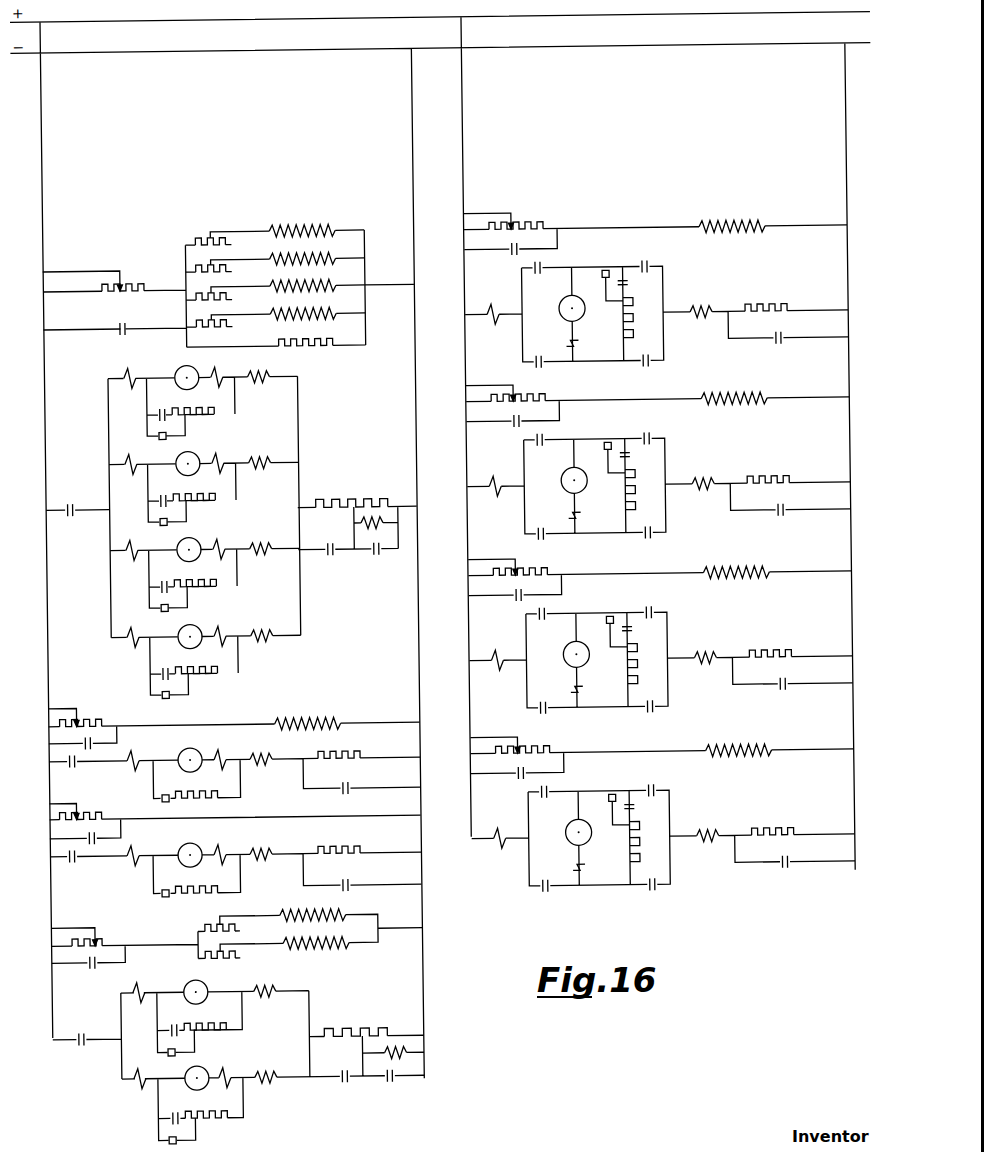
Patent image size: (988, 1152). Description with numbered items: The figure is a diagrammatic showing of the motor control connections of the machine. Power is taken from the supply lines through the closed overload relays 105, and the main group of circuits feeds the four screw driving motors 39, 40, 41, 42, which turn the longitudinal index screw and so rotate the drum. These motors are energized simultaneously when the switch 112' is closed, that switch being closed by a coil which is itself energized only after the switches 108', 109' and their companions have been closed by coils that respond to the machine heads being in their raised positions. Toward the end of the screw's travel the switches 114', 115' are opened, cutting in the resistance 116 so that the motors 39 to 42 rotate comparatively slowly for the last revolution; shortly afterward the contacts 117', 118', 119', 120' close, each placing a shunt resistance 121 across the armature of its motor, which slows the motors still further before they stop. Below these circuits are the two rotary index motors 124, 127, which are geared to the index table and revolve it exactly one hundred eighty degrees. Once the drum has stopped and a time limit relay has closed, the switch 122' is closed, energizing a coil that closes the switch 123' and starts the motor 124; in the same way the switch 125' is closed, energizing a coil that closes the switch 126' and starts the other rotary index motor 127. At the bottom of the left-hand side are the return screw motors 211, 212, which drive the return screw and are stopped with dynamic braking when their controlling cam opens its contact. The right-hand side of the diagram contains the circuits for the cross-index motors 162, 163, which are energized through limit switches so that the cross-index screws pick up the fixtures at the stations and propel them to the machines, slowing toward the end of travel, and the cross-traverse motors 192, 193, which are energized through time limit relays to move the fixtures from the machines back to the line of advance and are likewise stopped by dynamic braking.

The overload relays 105 is at (124, 371).
The screw driving motor 39 is at (179, 367).
The screw driving motor 40 is at (189, 462).
The screw driving motor 41 is at (189, 544).
The screw driving motor 42 is at (188, 632).
The contact 117' is at (139, 406).
The contact 118' is at (140, 492).
The contact 119' is at (140, 579).
The contact 120' is at (173, 664).
The shunt resistance 121 is at (185, 412).
The switch 108' is at (145, 437).
The switch 109' is at (147, 519).
The switch 112' is at (78, 500).
The resistance 116 is at (337, 500).
The switch 115' is at (334, 557).
The switch 114' is at (384, 556).
The rotary index motor 124 is at (200, 751).
The rotary index motor 127 is at (199, 848).
The switch 123' is at (93, 773).
The switch 126' is at (94, 867).
The switch 122' is at (172, 809).
The switch 125' is at (177, 905).
The return screw motor 211 is at (206, 987).
The return screw motor 212 is at (206, 1072).
The cross-index motor 162 is at (583, 311).
The cross-index motor 163 is at (589, 484).
The cross-traverse motor 192 is at (591, 658).
The cross-traverse motor 193 is at (594, 836).